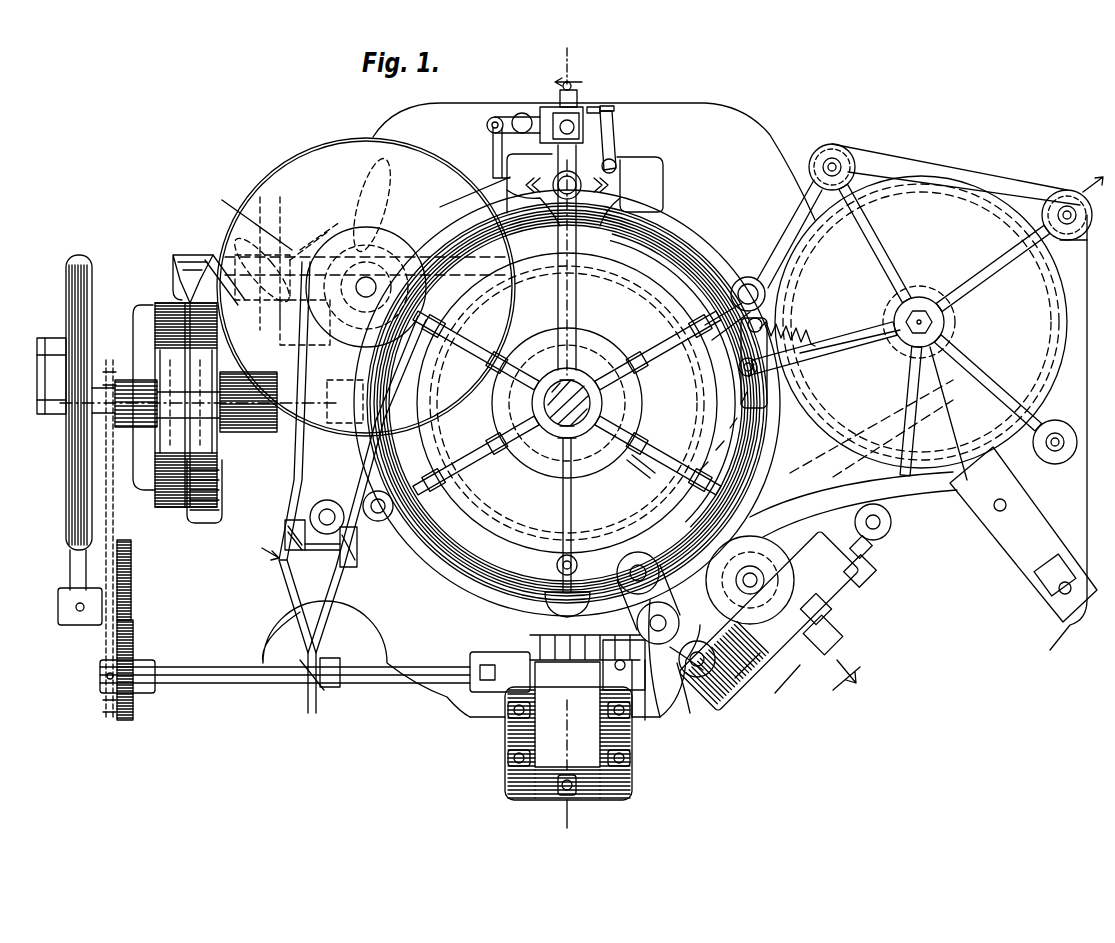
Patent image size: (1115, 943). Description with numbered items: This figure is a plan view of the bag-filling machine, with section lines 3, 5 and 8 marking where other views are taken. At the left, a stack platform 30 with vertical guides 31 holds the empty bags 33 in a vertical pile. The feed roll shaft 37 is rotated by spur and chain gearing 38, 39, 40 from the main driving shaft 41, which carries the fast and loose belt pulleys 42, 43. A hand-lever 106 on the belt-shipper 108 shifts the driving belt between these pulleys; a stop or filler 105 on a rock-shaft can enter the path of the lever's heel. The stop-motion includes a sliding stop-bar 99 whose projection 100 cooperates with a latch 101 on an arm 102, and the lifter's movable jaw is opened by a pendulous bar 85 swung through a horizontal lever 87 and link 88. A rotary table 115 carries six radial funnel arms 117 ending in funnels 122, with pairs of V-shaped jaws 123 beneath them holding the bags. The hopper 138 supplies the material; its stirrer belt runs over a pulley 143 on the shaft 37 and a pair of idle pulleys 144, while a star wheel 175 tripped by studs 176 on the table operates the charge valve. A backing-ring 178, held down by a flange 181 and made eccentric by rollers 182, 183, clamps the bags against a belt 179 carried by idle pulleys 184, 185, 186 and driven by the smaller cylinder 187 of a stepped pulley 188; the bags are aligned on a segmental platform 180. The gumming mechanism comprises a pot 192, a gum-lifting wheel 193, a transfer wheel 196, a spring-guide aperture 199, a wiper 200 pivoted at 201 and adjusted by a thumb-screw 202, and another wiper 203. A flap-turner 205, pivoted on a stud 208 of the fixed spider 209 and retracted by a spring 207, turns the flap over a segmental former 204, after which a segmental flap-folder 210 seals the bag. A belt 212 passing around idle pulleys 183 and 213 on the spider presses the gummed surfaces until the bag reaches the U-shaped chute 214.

The section line 3— 3 is at (569, 428).
The section line 5— 5 is at (534, 442).
The section line 8— 8 is at (676, 368).
The stack platform 30 is at (632, 793).
The vertical guides 31 is at (560, 785).
The bags 33 is at (535, 728).
The shaft 37 is at (378, 683).
The spur and chain gearing 38 is at (117, 650).
The spur and chain gearing 39 is at (135, 592).
The spur and chain gearing 40 is at (118, 510).
The main driving shaft 41 is at (52, 440).
The fast belt pulley 42 is at (222, 440).
The loose belt pulley 43 is at (110, 430).
The pendulous bar 85 is at (545, 110).
The horizontal lever 87 is at (495, 117).
The link 88 is at (492, 146).
The stop-bar 99 is at (597, 107).
The projection 100 is at (612, 106).
The latch 101 is at (625, 142).
The arm 102 is at (650, 180).
The stop or filler 105 is at (180, 253).
The hand-lever 106 is at (208, 258).
The belt-shipper 108 is at (222, 515).
The wheel or table 115 is at (475, 456).
The radial funnel arms 117 is at (556, 515).
The funnels 122 is at (580, 180).
The jaws 123 is at (505, 170).
The hopper 138 is at (318, 155).
The pulley 143 is at (305, 700).
The idle pulleys 144 is at (286, 555).
The star wheel 175 is at (475, 358).
The studs 176 is at (624, 530).
The backing-ring 178 is at (450, 560).
The belt 179 is at (678, 680).
The segmental platform 180 is at (470, 585).
The flange 181 is at (548, 460).
The roller 182 is at (573, 471).
The roller 183 is at (671, 352).
The idle pulley 184 is at (648, 725).
The idle pulley 185 is at (730, 712).
The idle pulley 186 is at (885, 534).
The smaller cylinder 187 is at (952, 185).
The stepped pulley 188 is at (975, 205).
The pot 192 is at (792, 628).
The gum-lifting wheel 193 is at (830, 608).
The transfer wheel 196 is at (830, 630).
The aperture 199 is at (797, 672).
The wiper 200 is at (864, 590).
The pivot 201 is at (760, 700).
The thumb-screw 202 is at (872, 570).
The wiper 203 is at (812, 700).
The segmental former 204 is at (820, 492).
The flap-turner 205 is at (682, 462).
The spring 207 is at (776, 335).
The stud 208 is at (790, 375).
The spider 209 is at (892, 265).
The segmental flap-folder 210 is at (871, 403).
The belt 212 is at (872, 152).
The idle pulley 213 is at (832, 145).
The chute 214 is at (960, 498).